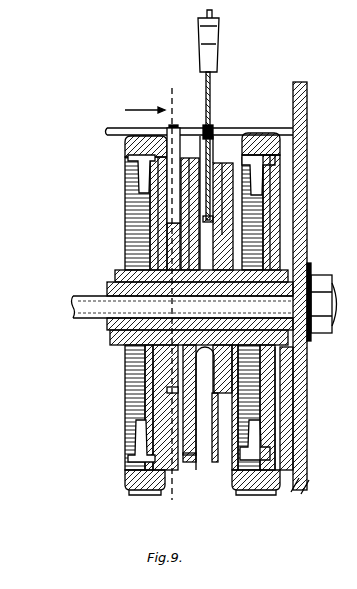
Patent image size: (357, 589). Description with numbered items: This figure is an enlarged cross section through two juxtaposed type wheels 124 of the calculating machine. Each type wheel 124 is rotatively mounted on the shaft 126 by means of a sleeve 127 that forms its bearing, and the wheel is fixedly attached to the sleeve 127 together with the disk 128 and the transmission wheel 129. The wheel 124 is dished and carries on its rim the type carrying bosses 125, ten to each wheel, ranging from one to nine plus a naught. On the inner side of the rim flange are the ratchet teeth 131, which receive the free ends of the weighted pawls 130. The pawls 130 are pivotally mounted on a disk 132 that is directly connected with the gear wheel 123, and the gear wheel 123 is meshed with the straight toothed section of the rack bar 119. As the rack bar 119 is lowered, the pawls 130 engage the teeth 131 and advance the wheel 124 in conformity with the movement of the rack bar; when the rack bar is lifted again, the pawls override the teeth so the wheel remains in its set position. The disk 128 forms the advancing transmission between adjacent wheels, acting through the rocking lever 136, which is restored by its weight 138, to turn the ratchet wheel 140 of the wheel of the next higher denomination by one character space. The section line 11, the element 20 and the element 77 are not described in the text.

The section line 11- 11 is at (151, 293).
The nut 20 is at (335, 286).
The spring 77 is at (175, 313).
The rack bar 119 is at (224, 200).
The gear wheel 123 is at (227, 396).
The type wheel 124 is at (266, 146).
The type carrying boss 125 is at (124, 477).
The shaft 126 is at (88, 306).
The sleeve 127 is at (245, 286).
The disk 128 is at (215, 466).
The transmission wheel 129 is at (190, 463).
The pawl 130 is at (142, 166).
The teeth 131 is at (278, 402).
The disk 132 is at (264, 398).
The rocking lever 136 is at (214, 105).
The weight 138 is at (212, 32).
The ratchet wheel 140 is at (175, 392).